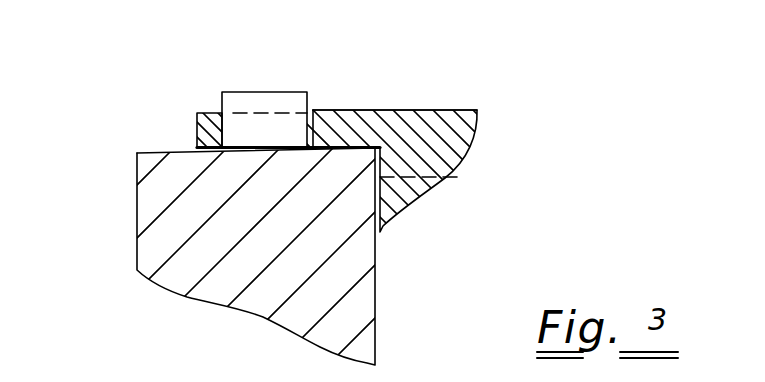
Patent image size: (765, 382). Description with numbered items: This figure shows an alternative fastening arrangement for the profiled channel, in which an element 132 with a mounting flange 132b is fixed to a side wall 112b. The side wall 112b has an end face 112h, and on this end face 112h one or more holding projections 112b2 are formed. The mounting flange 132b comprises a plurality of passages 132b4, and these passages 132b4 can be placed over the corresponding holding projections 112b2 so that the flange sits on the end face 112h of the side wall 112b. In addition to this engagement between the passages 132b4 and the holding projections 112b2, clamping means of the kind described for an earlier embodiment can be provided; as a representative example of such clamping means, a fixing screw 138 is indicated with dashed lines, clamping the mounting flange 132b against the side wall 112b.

The side wall 112b is at (157, 198).
The end face 112h is at (180, 144).
The holding projection 112b2 is at (236, 132).
The profiled channel cover 132 is at (466, 151).
The mounting flange 132b is at (347, 110).
The passage 132b4 is at (248, 128).
The fixing screw 138 is at (462, 177).